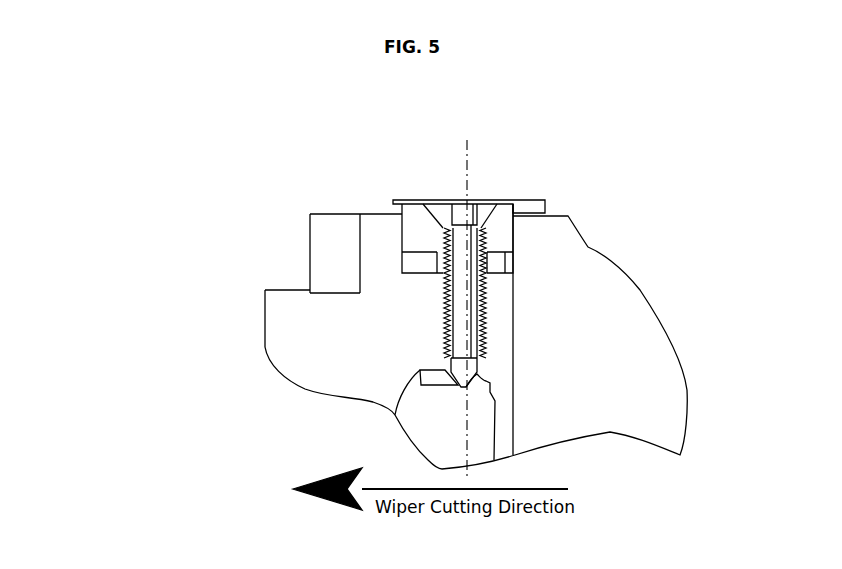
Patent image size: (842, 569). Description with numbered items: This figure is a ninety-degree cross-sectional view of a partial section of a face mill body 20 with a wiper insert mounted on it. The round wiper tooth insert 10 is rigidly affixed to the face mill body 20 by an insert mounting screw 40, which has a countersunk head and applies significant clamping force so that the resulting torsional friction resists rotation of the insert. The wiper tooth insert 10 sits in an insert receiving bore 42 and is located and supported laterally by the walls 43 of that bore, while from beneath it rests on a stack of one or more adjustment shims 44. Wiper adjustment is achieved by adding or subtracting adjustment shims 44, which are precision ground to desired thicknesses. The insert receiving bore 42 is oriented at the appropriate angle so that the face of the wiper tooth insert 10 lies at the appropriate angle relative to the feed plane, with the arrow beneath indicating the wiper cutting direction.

The round wiper tooth insert 10 is at (532, 198).
The face mill body 20 is at (605, 362).
The insert mounting screw 40 is at (435, 198).
The insert receiving bore 42 is at (400, 232).
The walls 43 is at (377, 243).
The adjustment shims 44 is at (420, 262).